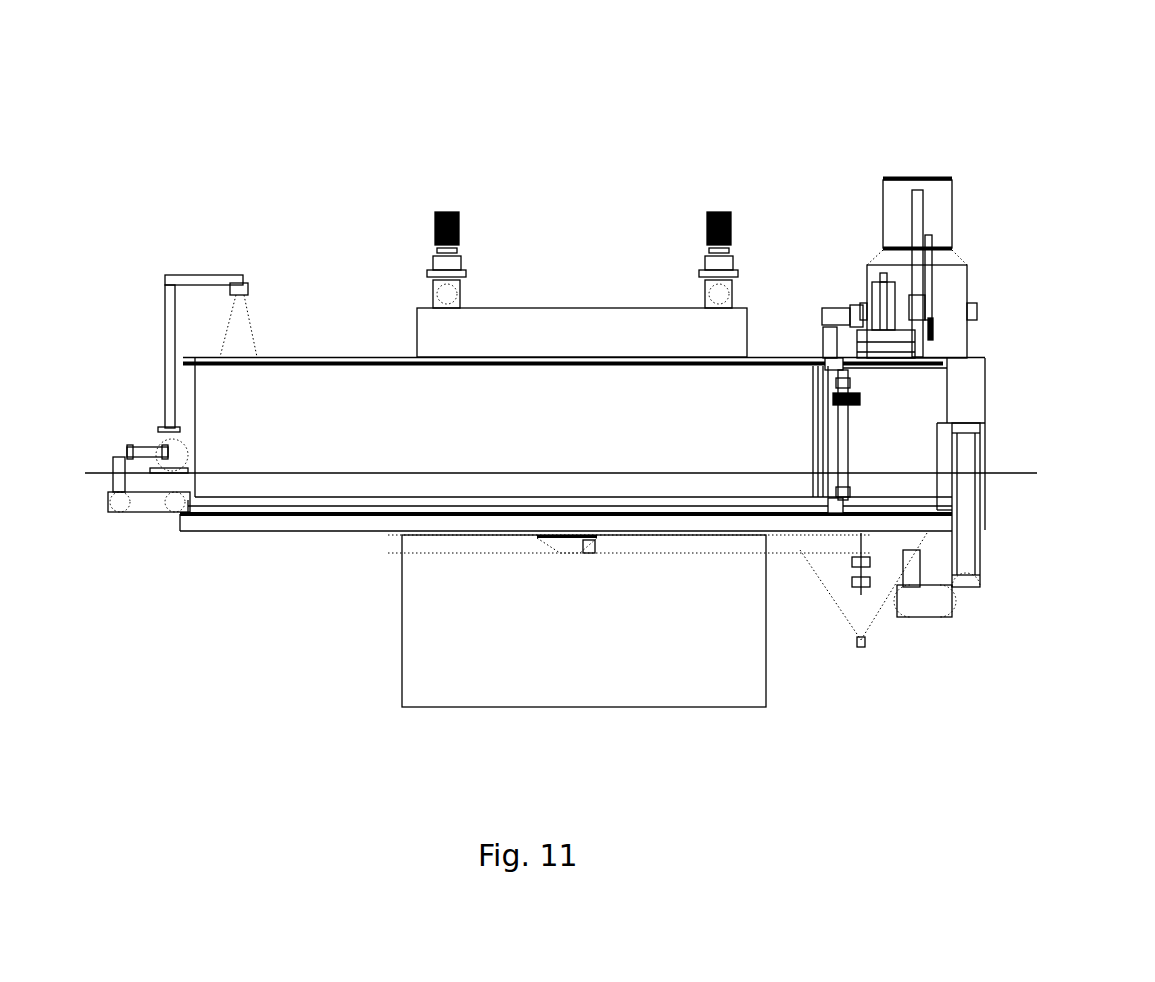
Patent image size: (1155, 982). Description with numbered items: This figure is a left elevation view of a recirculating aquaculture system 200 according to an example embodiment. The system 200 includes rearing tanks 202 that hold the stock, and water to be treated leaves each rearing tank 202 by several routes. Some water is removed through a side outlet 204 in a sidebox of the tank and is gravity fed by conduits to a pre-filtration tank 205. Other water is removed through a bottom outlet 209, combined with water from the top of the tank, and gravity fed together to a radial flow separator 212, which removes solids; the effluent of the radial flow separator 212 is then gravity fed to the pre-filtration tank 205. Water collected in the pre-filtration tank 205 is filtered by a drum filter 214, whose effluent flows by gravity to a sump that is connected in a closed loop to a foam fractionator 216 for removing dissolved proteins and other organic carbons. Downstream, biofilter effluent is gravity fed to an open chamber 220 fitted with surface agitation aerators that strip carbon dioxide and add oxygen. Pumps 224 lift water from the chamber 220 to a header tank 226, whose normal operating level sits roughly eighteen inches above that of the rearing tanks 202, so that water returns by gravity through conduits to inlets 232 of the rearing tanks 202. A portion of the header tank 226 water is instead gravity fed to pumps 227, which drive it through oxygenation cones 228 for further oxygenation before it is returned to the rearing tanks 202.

The recirculating aquaculture system 200 is at (578, 150).
The rearing tank 202 is at (352, 357).
The side outlet 204 is at (985, 428).
The pre-filtration tank 205 is at (975, 380).
The bottom outlet 209 is at (540, 548).
The radial flow separator 212 is at (872, 617).
The drum filter 214 is at (845, 327).
The foam fractionator 216 is at (912, 177).
The chamber 220 is at (665, 705).
The pump 224 is at (445, 210).
The header tank 226 is at (595, 308).
The pump 227 is at (152, 437).
The oxygenation cone 228 is at (227, 312).
The inlet 232 is at (833, 373).